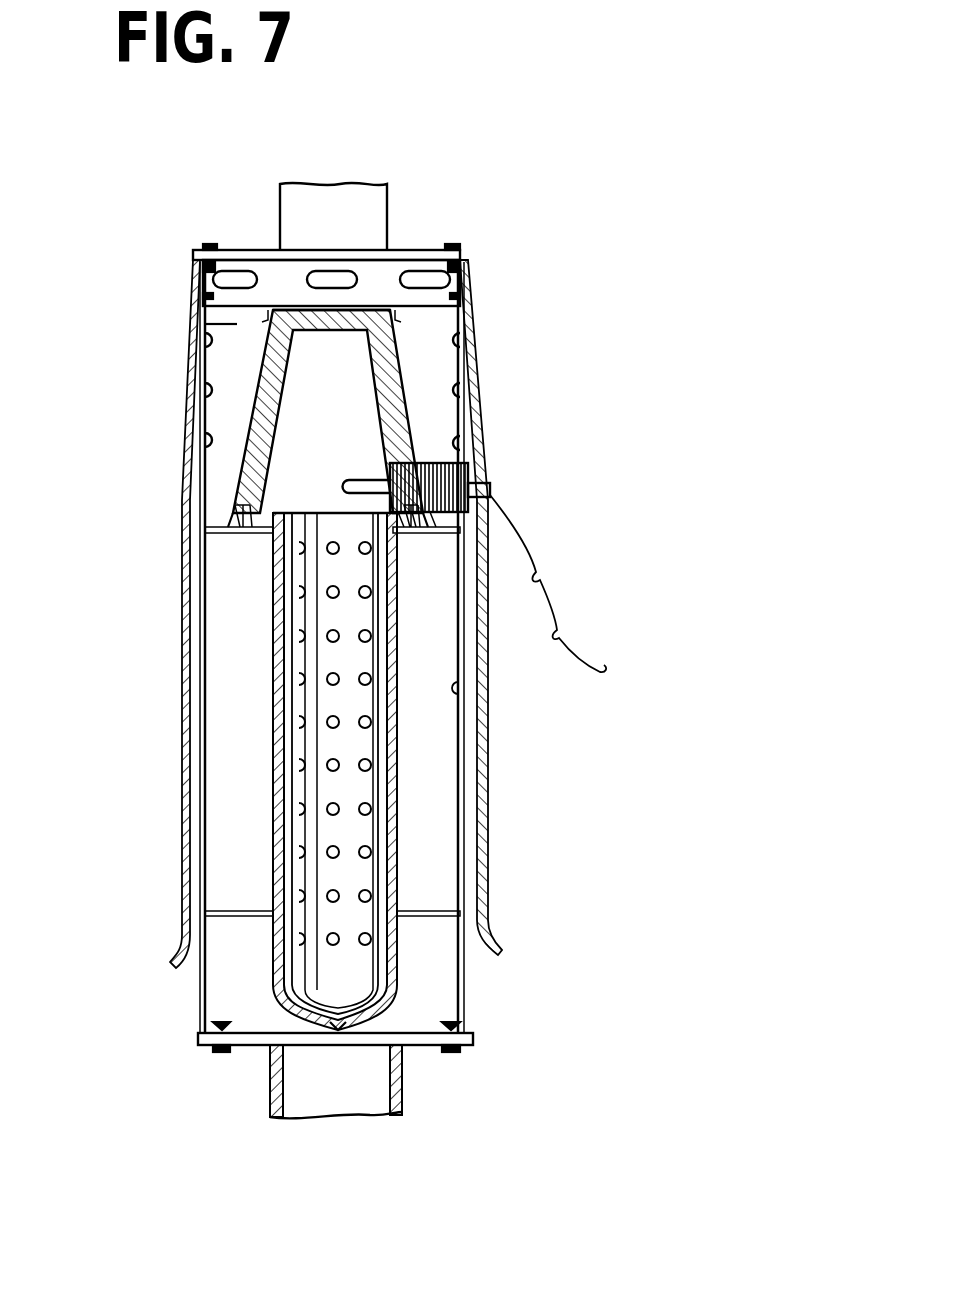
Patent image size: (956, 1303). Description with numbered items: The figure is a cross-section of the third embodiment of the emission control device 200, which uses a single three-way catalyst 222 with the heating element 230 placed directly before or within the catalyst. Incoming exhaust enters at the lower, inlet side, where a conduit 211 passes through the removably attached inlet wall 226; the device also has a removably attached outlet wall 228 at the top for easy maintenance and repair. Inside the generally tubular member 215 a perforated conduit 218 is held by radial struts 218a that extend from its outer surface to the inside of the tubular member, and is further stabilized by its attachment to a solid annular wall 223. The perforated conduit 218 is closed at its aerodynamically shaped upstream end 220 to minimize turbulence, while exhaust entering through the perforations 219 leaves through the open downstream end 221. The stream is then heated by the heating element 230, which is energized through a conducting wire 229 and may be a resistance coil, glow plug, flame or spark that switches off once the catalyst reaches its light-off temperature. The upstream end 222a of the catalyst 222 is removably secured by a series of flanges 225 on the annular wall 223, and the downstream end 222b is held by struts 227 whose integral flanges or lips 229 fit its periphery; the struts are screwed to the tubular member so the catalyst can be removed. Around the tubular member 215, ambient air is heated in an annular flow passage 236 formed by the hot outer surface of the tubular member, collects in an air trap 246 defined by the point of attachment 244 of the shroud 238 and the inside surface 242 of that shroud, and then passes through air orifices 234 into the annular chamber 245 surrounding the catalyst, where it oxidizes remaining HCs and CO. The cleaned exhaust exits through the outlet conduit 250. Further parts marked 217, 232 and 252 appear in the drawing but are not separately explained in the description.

The third embodiment device 200 is at (592, 552).
The inlet pipe 211 is at (368, 1110).
The generally tubular member 215 is at (205, 688).
The inner sleeve 217 is at (470, 622).
The perforated conduit 218 is at (327, 815).
The radial struts 218a is at (450, 930).
The perforations 219 is at (300, 722).
The upstream end 220 is at (340, 1024).
The downstream end 221 is at (203, 250).
The three-way catalyst 222 is at (388, 372).
The upstream end of catalyst 222a is at (215, 560).
The downstream end of catalyst 222b is at (372, 312).
The annular wall 223 is at (262, 530).
The flanges 225 is at (230, 526).
The inlet wall 226 is at (455, 1047).
The struts 227 is at (200, 280).
The outlet wall 228 is at (447, 249).
The flanges or lips 229 is at (463, 290).
The heating element 230 is at (466, 465).
The cone sleeve 232 is at (336, 410).
The air orifices 234 is at (323, 277).
The annular flow passage 236 is at (200, 770).
The shroud 238 is at (490, 853).
The inside surface of shroud 242 is at (458, 688).
The point of attachment 244 is at (465, 272).
The annular chamber 245 is at (215, 325).
The air trap 246 is at (463, 303).
The outlet conduit 250 is at (322, 207).
The bolts 252 is at (198, 258).